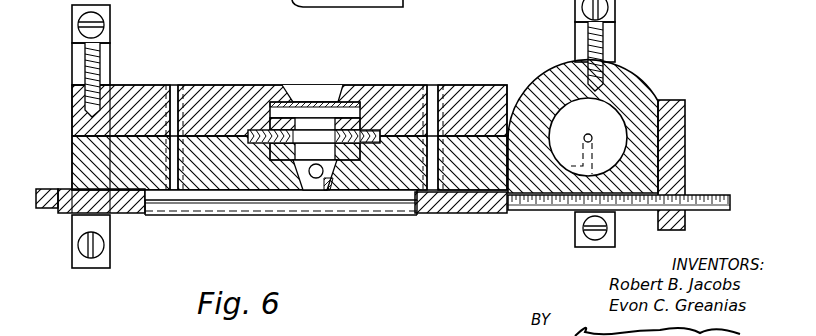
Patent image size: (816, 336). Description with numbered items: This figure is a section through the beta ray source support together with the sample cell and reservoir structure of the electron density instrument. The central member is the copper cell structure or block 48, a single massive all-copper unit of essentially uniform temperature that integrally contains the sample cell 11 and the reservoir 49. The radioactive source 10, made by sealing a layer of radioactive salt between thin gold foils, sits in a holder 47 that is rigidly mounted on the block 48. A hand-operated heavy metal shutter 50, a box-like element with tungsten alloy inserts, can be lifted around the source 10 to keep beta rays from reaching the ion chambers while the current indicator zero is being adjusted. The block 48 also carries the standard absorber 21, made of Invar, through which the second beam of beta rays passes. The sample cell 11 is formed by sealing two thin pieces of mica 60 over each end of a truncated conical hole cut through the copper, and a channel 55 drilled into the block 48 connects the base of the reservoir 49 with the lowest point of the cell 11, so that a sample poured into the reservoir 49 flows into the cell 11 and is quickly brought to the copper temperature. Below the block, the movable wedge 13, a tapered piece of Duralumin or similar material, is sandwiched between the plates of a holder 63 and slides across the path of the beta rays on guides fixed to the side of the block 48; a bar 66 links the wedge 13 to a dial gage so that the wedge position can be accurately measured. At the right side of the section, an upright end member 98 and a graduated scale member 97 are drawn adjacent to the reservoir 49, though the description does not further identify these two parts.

The copper cell structure 48 is at (240, 85).
The standard absorber 21 is at (281, 88).
The radioactive source 10 is at (320, 136).
The heavy metal shutter 50 is at (355, 124).
The holder 47 is at (376, 132).
The reservoir 49 is at (604, 120).
The end plate 98 is at (687, 140).
The scale ruler 97 is at (708, 195).
The bar 66 is at (47, 188).
The holder 63 is at (124, 214).
The mica 60 is at (298, 163).
The sample cell 11 is at (324, 181).
The channel 55 is at (336, 180).
The movable wedge 13 is at (392, 200).